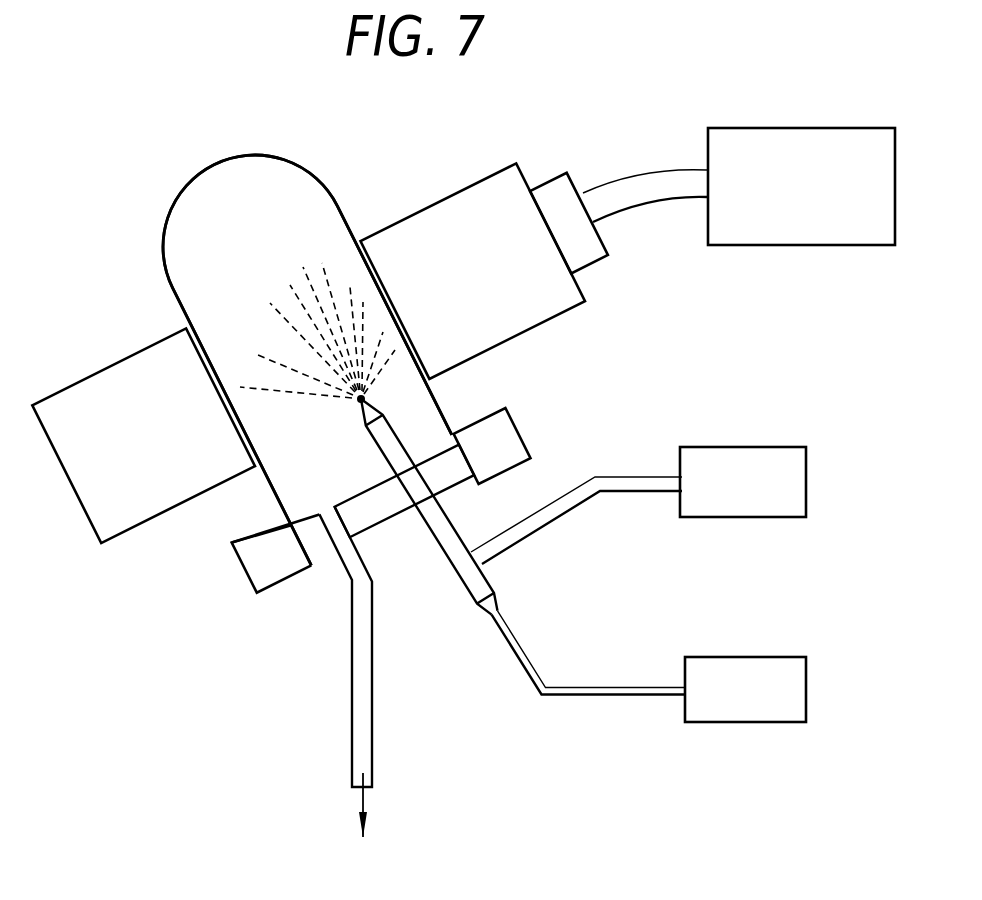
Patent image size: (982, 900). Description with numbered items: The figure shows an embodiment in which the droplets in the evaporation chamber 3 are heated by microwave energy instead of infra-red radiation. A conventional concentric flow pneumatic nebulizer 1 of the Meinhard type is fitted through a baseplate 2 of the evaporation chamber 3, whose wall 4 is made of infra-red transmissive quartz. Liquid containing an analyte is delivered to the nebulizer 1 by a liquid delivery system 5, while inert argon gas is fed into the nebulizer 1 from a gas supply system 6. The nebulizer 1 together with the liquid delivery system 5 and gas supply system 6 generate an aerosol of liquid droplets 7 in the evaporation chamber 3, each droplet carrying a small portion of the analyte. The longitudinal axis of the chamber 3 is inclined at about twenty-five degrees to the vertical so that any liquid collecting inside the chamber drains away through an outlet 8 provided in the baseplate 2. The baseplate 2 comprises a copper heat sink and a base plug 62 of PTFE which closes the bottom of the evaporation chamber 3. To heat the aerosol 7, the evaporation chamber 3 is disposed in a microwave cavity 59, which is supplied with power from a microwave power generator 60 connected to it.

The nebulizer 1 is at (447, 522).
The baseplate 2 is at (500, 418).
The evaporation chamber 3 is at (284, 223).
The wall 4 is at (164, 268).
The liquid delivery system 5 is at (757, 706).
The gas supply system 6 is at (755, 498).
The aerosol of liquid droplets 7 is at (290, 322).
The outlet 8 is at (332, 518).
The microwave cavity 59 is at (488, 188).
The microwave power generator 60 is at (786, 192).
The base plug 62 is at (356, 520).